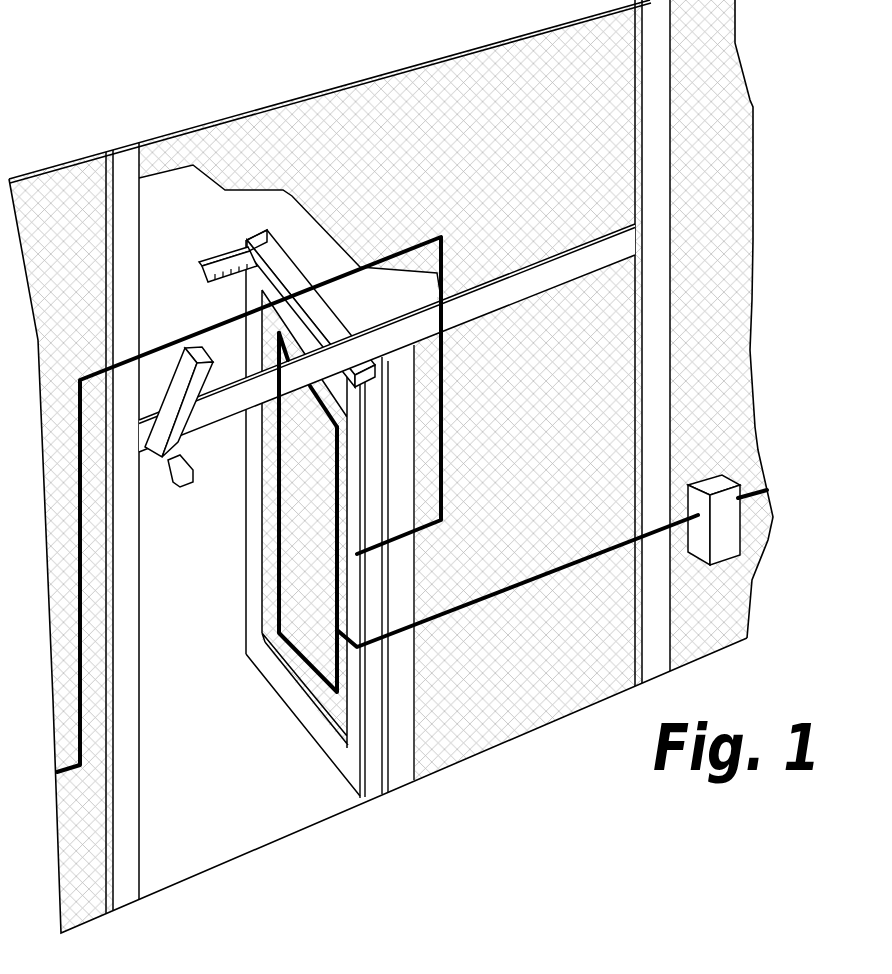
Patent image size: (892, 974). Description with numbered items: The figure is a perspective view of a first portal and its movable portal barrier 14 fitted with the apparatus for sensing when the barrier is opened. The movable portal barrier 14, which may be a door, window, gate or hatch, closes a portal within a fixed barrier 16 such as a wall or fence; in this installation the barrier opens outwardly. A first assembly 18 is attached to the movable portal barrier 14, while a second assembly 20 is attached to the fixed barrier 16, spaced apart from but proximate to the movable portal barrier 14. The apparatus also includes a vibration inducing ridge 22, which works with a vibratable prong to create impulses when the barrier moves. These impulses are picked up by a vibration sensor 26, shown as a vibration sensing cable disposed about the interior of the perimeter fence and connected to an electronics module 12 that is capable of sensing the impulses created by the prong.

The electronics module 12 is at (727, 529).
The movable portal barrier 14 is at (244, 572).
The fixed barrier 16 is at (755, 107).
The first assembly 18 is at (226, 246).
The second assembly 20 is at (176, 348).
The vibration inducing ridge 22 is at (232, 273).
The vibration sensor 26 is at (356, 312).